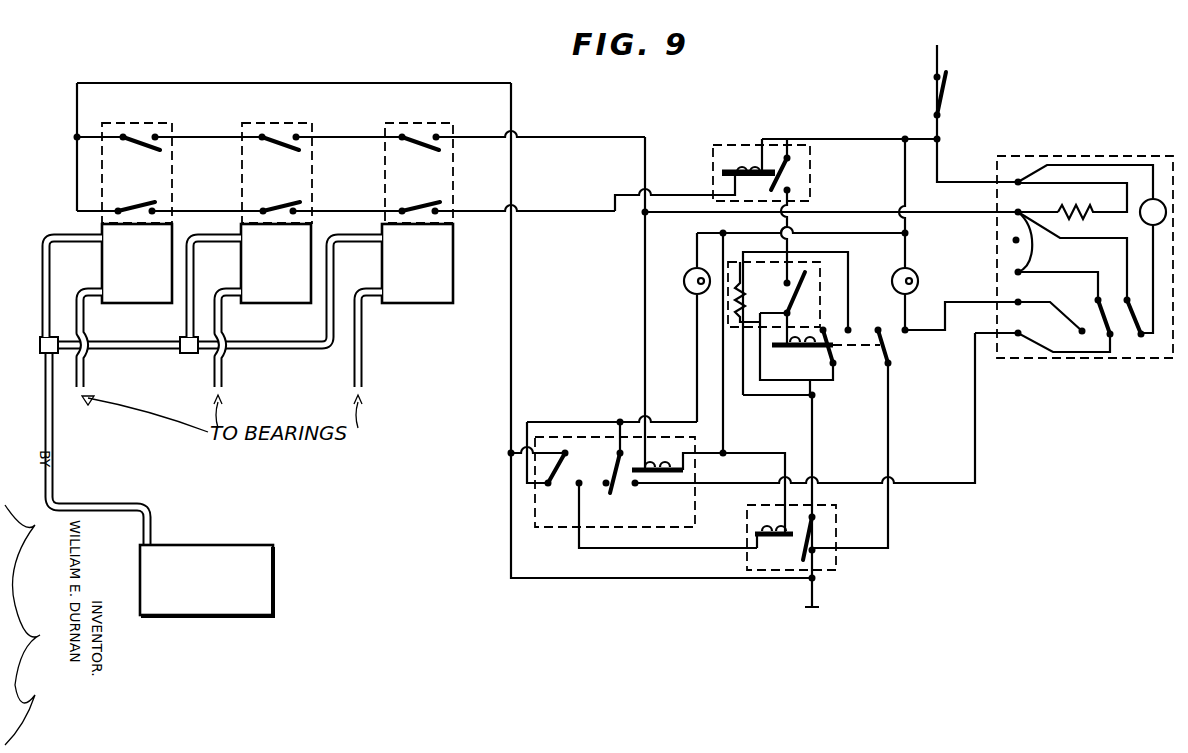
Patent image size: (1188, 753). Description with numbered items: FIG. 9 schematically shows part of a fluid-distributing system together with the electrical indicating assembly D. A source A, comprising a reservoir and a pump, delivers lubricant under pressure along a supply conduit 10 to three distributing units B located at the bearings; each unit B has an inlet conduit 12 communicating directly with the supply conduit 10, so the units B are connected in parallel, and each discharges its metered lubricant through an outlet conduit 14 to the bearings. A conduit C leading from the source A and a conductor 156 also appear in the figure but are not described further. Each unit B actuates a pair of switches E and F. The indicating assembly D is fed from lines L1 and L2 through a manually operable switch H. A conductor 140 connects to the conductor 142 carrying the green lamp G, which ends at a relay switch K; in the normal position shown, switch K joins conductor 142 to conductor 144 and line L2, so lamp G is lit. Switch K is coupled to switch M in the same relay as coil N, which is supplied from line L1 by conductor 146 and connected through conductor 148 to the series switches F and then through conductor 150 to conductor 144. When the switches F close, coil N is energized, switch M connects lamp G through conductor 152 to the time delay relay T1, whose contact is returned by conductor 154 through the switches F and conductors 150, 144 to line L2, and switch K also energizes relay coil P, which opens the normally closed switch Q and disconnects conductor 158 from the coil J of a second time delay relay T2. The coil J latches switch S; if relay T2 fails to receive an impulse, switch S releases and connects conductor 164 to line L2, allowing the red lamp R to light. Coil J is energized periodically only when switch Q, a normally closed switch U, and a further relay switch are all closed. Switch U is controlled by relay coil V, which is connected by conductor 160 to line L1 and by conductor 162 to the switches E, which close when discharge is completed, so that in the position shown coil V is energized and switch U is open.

The supply conduit 10 is at (170, 352).
The inlet conduit 12 is at (44, 313).
The outlet conduit 14 is at (86, 380).
The conductor 140 is at (905, 181).
The conductor 142 is at (697, 367).
The conductor 144 is at (700, 580).
The conductor 146 is at (723, 414).
The conductor 148 is at (645, 341).
The conductor 150 is at (428, 85).
The conductor 152 is at (948, 484).
The conductor 154 is at (987, 215).
The conductor 156 is at (700, 550).
The conductor 158 is at (812, 438).
The conductor 160 is at (886, 144).
The conductor 162 is at (580, 208).
The conductor 164 is at (888, 416).
The source A is at (252, 545).
The distributing unit B is at (92, 266).
The supply conduit C is at (64, 436).
The indicating assembly D is at (784, 128).
The switch E is at (146, 200).
The switch F is at (145, 150).
The green lamp G is at (686, 260).
The manually operable switch H is at (924, 96).
The relay coil J is at (794, 366).
The relay switch K is at (592, 462).
The line L1 is at (977, 104).
The line L2 is at (829, 624).
The switch M is at (664, 494).
The relay coil N is at (692, 452).
The relay coil P is at (778, 576).
The switch Q is at (832, 528).
The red lamp R is at (930, 278).
The switch S is at (874, 372).
The time delay relay T1 is at (1082, 296).
The second time delay relay T2 is at (812, 306).
The switch U is at (802, 176).
The relay coil V is at (736, 170).